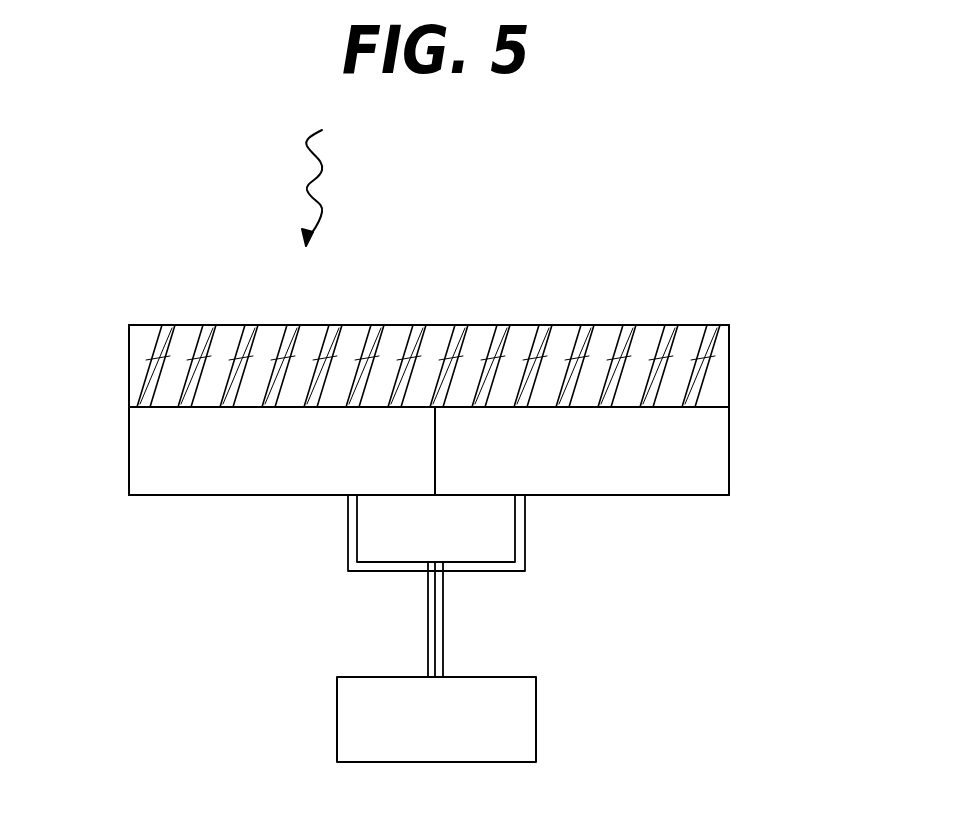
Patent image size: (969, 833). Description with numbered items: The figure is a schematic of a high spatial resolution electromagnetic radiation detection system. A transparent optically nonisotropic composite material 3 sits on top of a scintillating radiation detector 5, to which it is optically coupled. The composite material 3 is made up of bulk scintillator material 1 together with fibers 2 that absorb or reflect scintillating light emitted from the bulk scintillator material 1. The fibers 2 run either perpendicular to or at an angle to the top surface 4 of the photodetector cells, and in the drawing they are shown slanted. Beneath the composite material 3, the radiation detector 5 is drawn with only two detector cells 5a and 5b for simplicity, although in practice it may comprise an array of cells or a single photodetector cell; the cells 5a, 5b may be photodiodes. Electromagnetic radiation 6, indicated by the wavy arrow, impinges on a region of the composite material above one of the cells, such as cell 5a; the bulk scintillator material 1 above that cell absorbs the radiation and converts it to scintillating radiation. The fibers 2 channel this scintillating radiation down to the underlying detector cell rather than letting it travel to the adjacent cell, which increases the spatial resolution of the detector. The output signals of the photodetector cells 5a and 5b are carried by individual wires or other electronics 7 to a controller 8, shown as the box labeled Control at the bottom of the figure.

The bulk scintillator material 1 is at (143, 343).
The fibers 2 is at (140, 373).
The transparent optically nonisotropic composite material 3 is at (729, 362).
The top surface 4 is at (475, 323).
The scintillating radiation detector 5 is at (729, 455).
The detector cell 5a is at (163, 483).
The detector cell 5b is at (690, 483).
The electromagnetic radiation 6 is at (303, 187).
The wires or other electronics 7 is at (444, 615).
The controller 8 is at (337, 725).